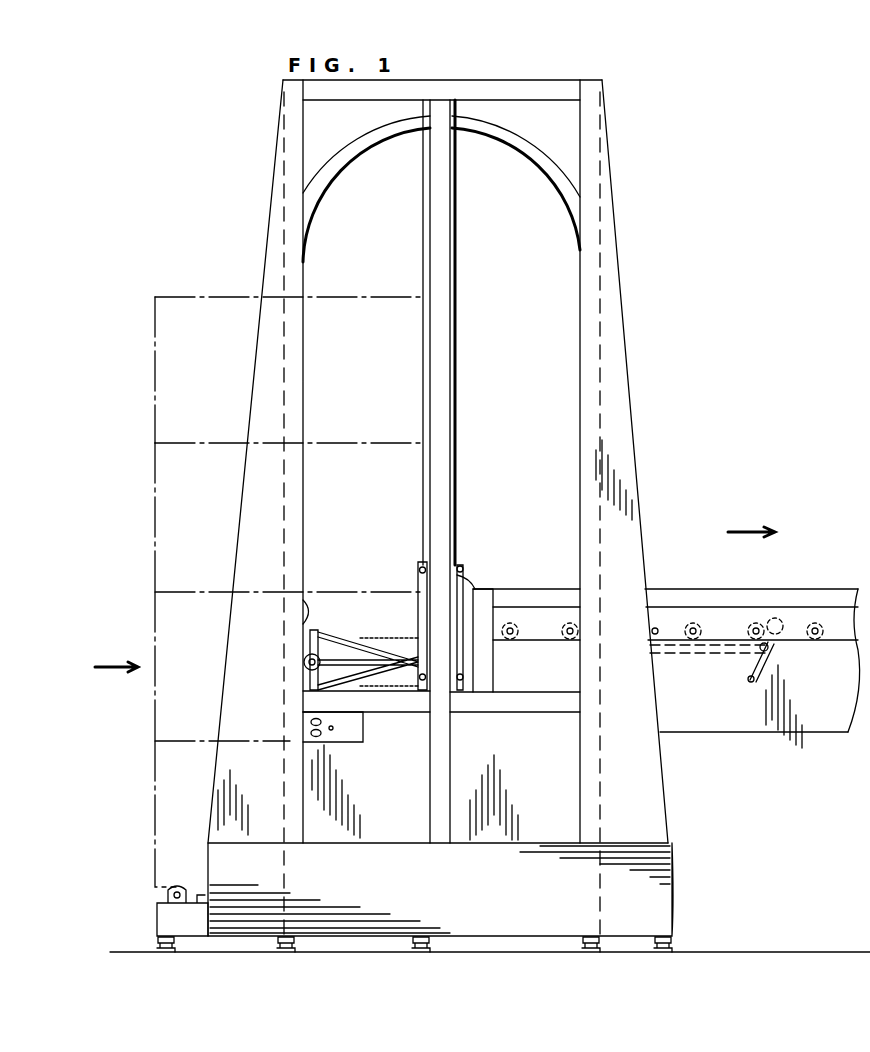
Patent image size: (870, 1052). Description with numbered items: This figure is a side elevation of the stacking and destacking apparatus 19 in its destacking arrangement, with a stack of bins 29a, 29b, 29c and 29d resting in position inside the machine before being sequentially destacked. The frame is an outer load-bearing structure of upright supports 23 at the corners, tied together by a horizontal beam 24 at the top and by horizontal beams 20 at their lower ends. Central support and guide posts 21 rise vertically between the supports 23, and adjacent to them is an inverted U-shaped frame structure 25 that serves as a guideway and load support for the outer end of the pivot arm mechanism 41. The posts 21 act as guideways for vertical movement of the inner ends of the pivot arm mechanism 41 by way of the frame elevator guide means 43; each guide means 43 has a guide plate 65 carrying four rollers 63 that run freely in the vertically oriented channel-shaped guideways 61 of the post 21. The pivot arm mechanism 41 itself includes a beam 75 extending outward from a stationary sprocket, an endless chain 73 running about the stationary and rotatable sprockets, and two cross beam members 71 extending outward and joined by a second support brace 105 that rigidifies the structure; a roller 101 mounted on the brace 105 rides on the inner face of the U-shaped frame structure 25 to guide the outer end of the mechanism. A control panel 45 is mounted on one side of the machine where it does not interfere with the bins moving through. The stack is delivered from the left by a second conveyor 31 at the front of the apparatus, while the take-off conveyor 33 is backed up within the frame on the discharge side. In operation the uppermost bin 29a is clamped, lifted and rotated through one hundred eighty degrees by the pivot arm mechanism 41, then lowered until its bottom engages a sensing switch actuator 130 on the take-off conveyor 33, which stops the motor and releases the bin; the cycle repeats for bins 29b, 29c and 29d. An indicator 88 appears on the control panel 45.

The loading apparatus 19 is at (620, 121).
The horizontal beam 20 is at (526, 714).
The central support and guide post 21 is at (432, 225).
The upright support 23 is at (280, 160).
The horizontal beam 24 is at (568, 82).
The inverted U-shaped frame structure 25 is at (498, 130).
The bin 29a is at (155, 336).
The bin 29b is at (155, 482).
The bin 29c is at (155, 626).
The bin 29d is at (155, 776).
The second conveyor 31 is at (184, 890).
The take-off conveyor 33 is at (708, 598).
The pivot arm mechanism 41 is at (320, 637).
The frame elevator guide means 43 is at (464, 582).
The control panel 45 is at (336, 742).
The channel-shaped guideway 61 is at (422, 190).
The roller 63 is at (418, 568).
The guide plate 65 is at (476, 590).
The cross beam member 71 is at (348, 642).
The endless chain 73 is at (378, 698).
The beam 75 is at (310, 645).
The indicator 88 is at (354, 724).
The roller 101 is at (305, 668).
The second support brace 105 is at (312, 684).
The sensing switch actuator 130 is at (776, 668).